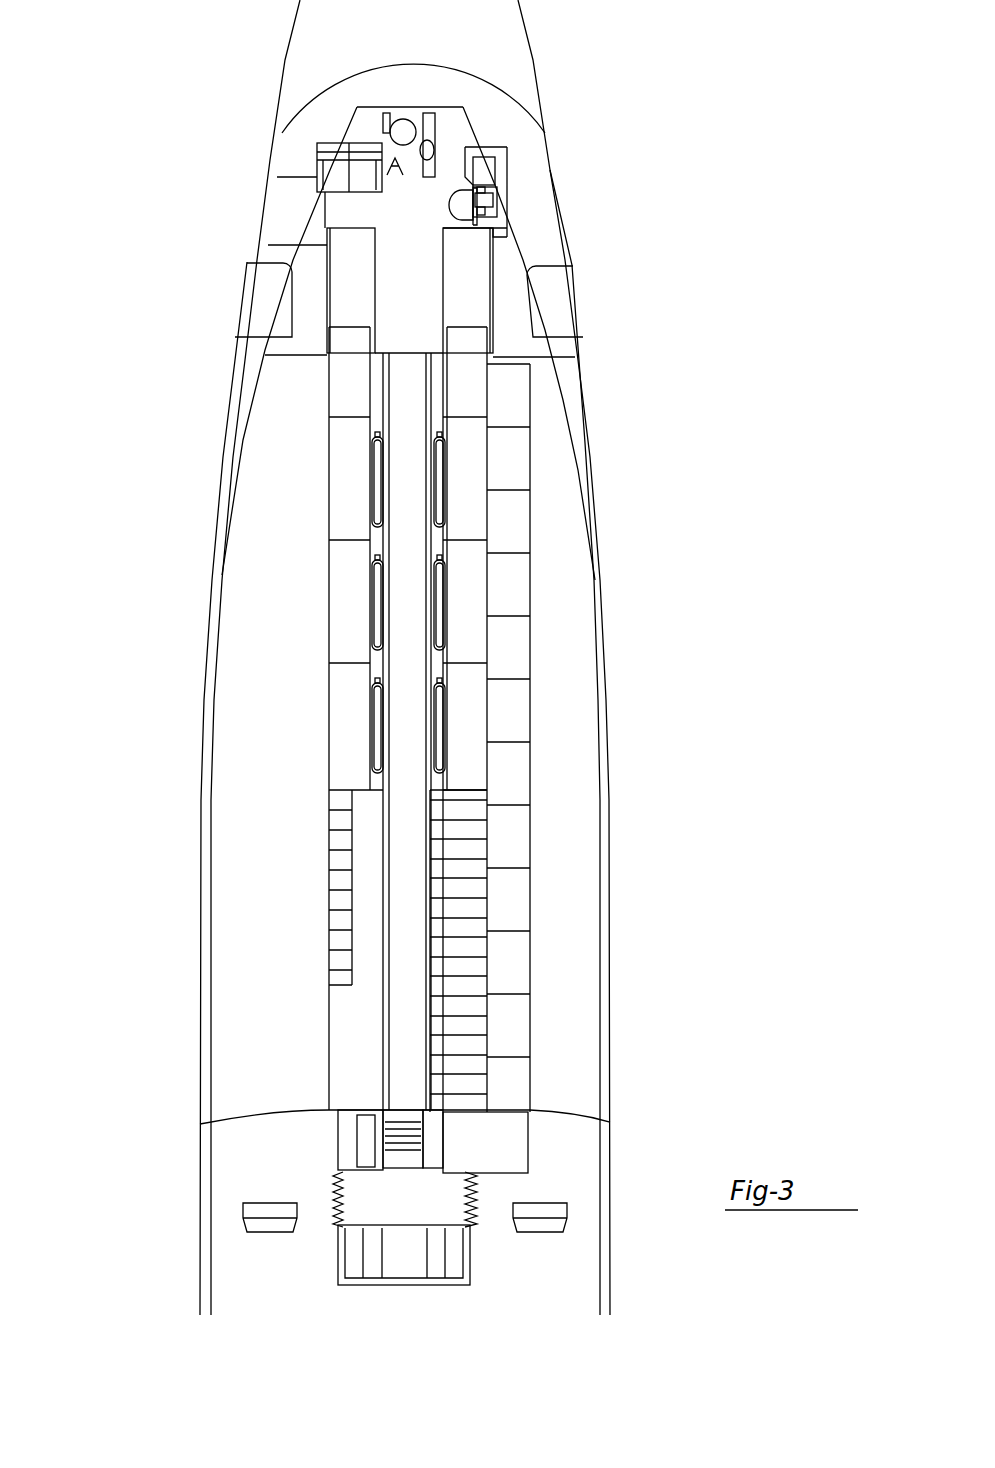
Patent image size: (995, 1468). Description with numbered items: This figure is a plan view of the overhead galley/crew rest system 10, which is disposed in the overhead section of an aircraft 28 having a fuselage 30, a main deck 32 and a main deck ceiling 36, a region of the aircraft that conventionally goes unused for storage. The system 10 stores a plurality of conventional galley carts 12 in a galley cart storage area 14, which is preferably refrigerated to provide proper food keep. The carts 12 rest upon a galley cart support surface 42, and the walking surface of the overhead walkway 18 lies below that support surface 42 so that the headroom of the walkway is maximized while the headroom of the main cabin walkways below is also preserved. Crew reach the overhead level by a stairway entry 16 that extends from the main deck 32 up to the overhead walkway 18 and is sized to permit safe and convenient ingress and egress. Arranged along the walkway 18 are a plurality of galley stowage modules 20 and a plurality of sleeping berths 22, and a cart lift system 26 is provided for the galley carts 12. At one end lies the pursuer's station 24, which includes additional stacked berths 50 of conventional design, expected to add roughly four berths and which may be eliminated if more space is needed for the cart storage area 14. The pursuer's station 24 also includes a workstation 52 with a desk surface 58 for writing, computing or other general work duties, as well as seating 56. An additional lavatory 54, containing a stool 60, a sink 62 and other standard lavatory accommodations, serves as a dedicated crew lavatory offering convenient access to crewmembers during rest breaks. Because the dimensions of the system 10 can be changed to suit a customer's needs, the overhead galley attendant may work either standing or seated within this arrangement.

The overhead galley/crew rest system 10 is at (176, 610).
The galley carts 12 is at (462, 1020).
The galley cart storage area 14 is at (522, 948).
The stairway entry 16 is at (403, 1168).
The overhead walkway 18 is at (398, 1033).
The galley stowage modules 20 is at (333, 940).
The sleeping berths 22 is at (343, 487).
The pursuer's station 24 is at (518, 172).
The cart lift system 26 is at (340, 1142).
The aircraft 28 is at (594, 426).
The fuselage 30 is at (611, 1013).
The main deck 32 is at (534, 1293).
The main deck ceiling 36 is at (505, 1107).
The galley cart support surface 42 is at (433, 797).
The stacked berths 50 is at (327, 270).
The workstation 52 is at (503, 218).
The additional lavatory 54 is at (388, 150).
The seating 56 is at (360, 153).
The desk surface 58 is at (500, 205).
The stool 60 is at (408, 126).
The sink 62 is at (430, 148).